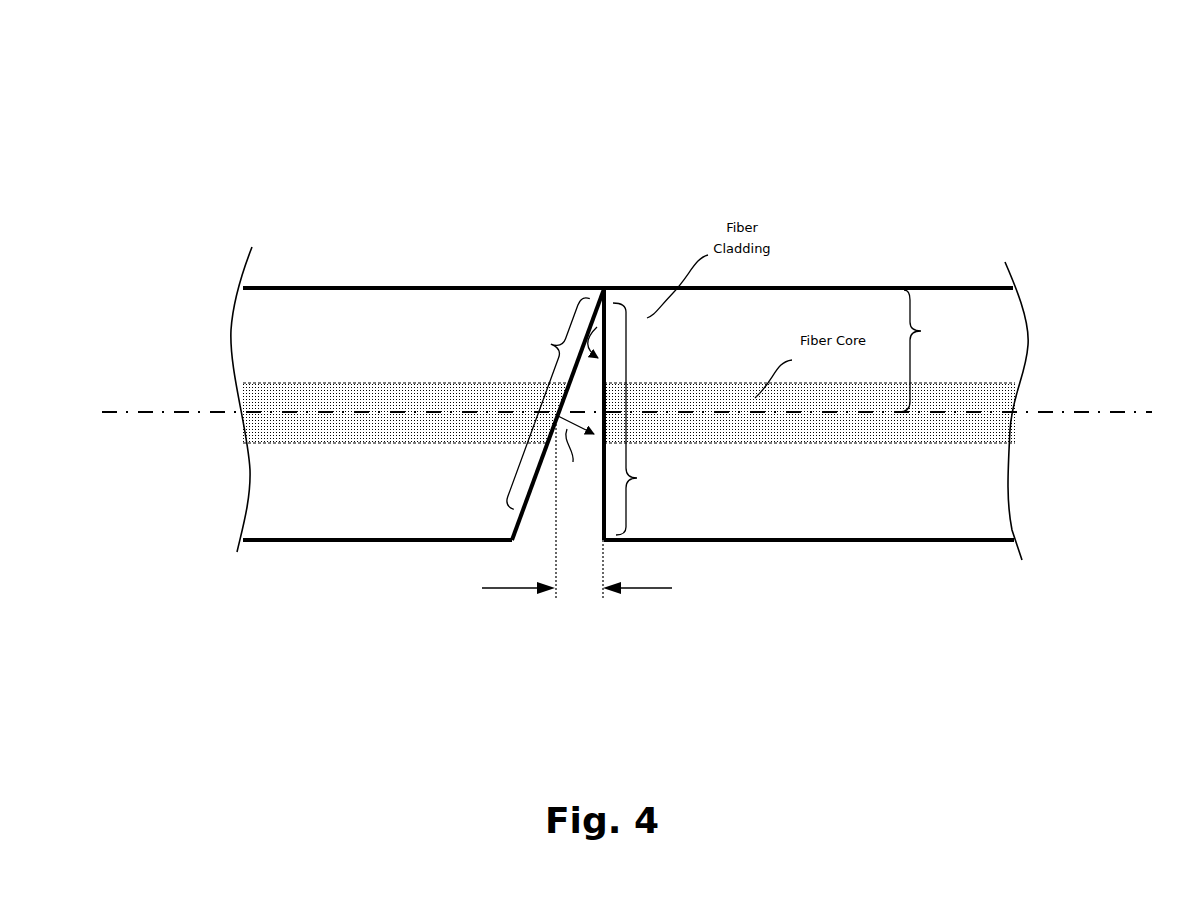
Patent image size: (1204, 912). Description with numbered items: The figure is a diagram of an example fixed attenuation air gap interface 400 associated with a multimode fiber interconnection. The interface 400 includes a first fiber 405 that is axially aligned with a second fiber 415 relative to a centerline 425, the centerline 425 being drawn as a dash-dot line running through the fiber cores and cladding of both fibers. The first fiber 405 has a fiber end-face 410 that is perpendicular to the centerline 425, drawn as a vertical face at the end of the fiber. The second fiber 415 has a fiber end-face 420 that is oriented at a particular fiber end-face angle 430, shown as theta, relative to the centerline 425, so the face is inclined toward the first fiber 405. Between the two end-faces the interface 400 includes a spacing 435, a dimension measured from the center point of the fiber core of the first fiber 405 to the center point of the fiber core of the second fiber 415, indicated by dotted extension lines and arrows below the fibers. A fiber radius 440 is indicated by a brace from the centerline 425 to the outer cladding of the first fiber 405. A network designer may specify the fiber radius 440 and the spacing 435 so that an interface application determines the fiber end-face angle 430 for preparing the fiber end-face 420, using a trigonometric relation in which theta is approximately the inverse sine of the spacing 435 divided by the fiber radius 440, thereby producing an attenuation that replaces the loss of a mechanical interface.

The air gap interface 400 is at (163, 54).
The first fiber 405 is at (800, 535).
The fiber end-face 410 is at (645, 478).
The second fiber 415 is at (364, 535).
The fiber end-face 420 is at (549, 350).
The centerline 425 is at (1047, 413).
The fiber end-face angle 430 is at (598, 287).
The spacing 435 is at (608, 574).
The fiber radius 440 is at (929, 335).